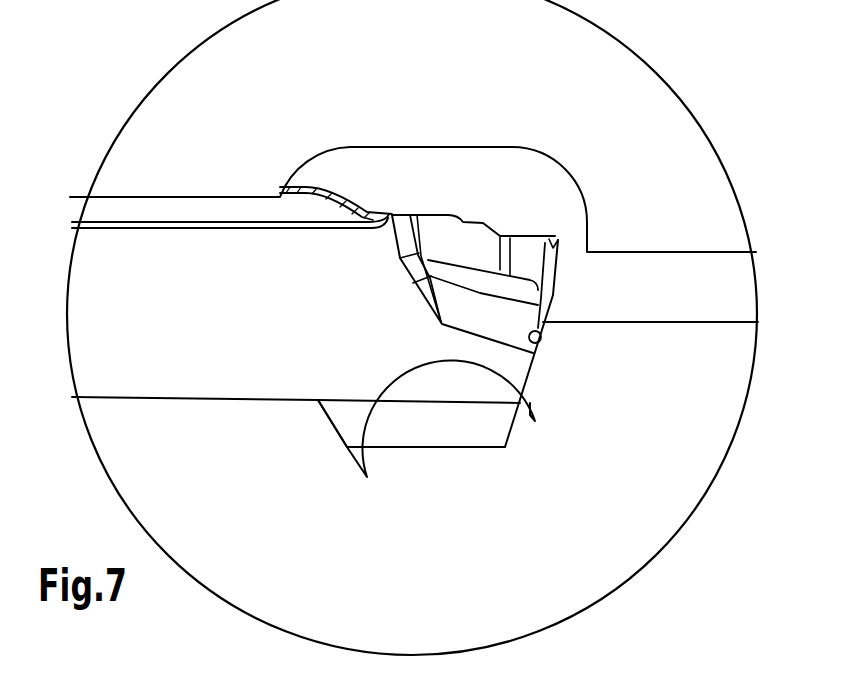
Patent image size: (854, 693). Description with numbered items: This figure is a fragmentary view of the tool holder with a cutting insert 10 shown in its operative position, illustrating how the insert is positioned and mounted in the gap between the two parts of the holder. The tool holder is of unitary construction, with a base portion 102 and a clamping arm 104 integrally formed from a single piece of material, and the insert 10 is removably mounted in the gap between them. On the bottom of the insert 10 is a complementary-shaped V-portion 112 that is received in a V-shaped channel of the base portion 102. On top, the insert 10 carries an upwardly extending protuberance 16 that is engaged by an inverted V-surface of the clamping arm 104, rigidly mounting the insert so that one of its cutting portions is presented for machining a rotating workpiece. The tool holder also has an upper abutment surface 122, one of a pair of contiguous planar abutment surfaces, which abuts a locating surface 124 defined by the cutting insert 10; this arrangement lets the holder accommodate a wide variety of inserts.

The cutting insert 10 is at (258, 315).
The protuberance 16 is at (307, 213).
The base portion 102 is at (241, 510).
The clamping arm 104 is at (237, 145).
The V-portion 112 is at (435, 441).
The upper abutment surface 122 is at (541, 338).
The locating surface 124 is at (532, 360).